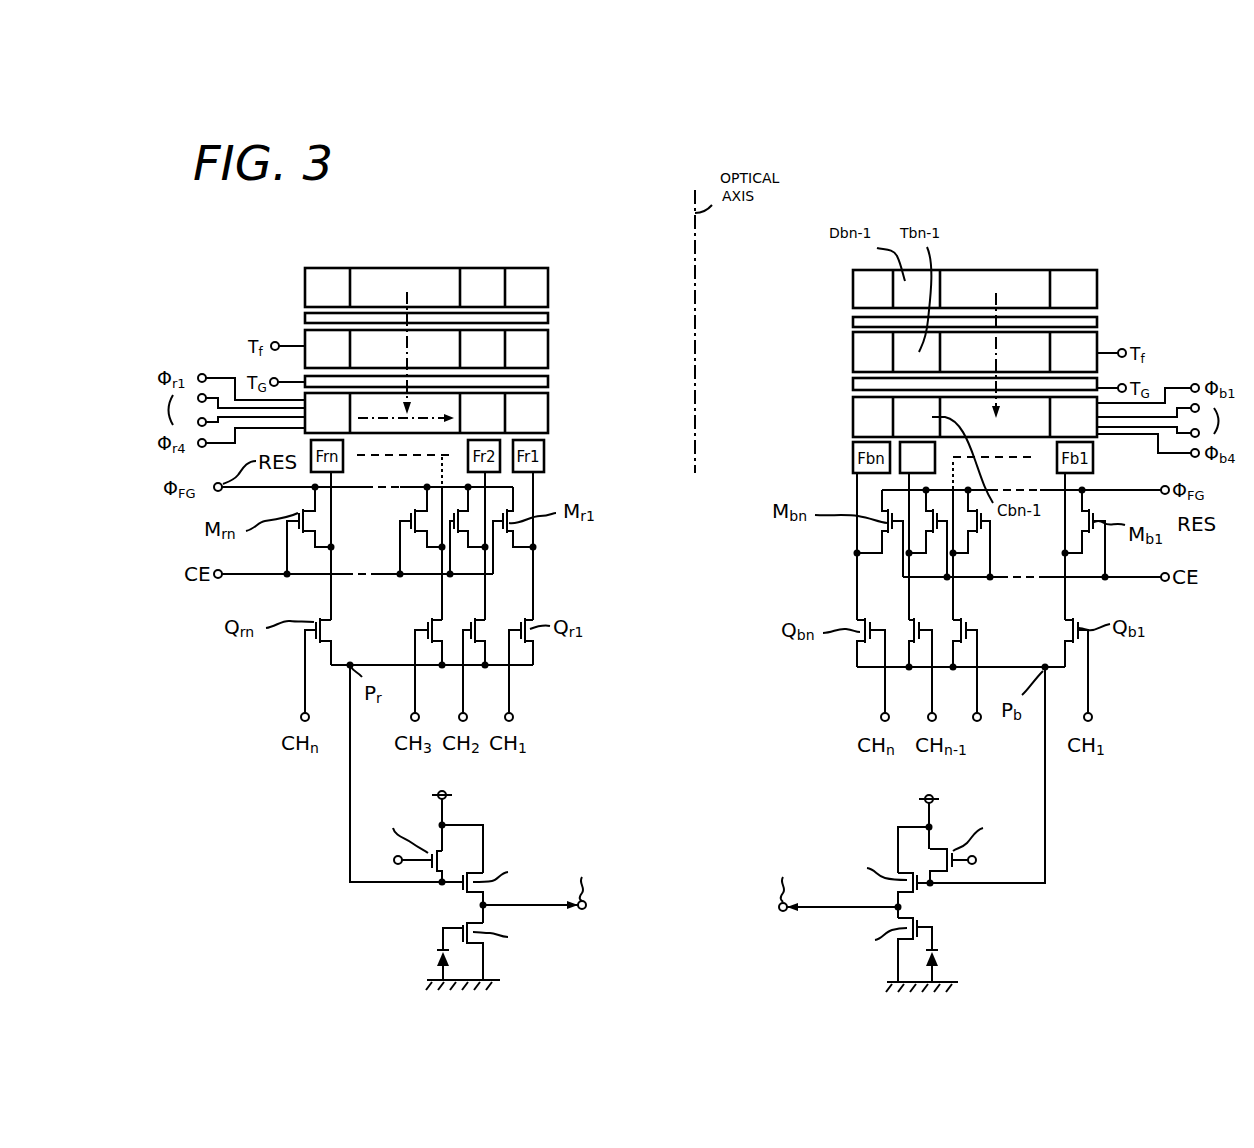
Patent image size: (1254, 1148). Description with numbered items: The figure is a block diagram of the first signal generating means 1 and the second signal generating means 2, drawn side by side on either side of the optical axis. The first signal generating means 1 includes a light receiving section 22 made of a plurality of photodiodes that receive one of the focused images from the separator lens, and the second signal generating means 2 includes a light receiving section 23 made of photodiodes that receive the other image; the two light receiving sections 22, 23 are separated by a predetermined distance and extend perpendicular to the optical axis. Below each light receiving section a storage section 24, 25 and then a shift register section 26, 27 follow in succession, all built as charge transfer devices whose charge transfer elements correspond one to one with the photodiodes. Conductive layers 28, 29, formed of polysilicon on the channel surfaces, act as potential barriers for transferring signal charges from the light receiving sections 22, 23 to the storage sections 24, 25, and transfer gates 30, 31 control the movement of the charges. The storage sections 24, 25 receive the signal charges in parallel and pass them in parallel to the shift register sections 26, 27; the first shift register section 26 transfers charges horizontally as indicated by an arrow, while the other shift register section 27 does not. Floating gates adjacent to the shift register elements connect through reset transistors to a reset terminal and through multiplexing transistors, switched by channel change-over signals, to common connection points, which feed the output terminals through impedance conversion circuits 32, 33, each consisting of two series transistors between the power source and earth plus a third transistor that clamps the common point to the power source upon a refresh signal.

The first signal generating means 1 is at (457, 257).
The second signal generating means 2 is at (1003, 255).
The light receiving section 22 is at (550, 277).
The conductive layer 28 is at (550, 319).
The storage section 24 is at (556, 350).
The transfer gate 30 is at (550, 382).
The shift register section 26 is at (556, 413).
The light receiving section 23 is at (848, 285).
The conductive layer 29 is at (852, 322).
The storage section 25 is at (846, 350).
The transfer gate 31 is at (852, 384).
The shift register section 27 is at (846, 417).
The impedance conversion circuit 32 is at (400, 929).
The impedance conversion circuit 33 is at (994, 931).